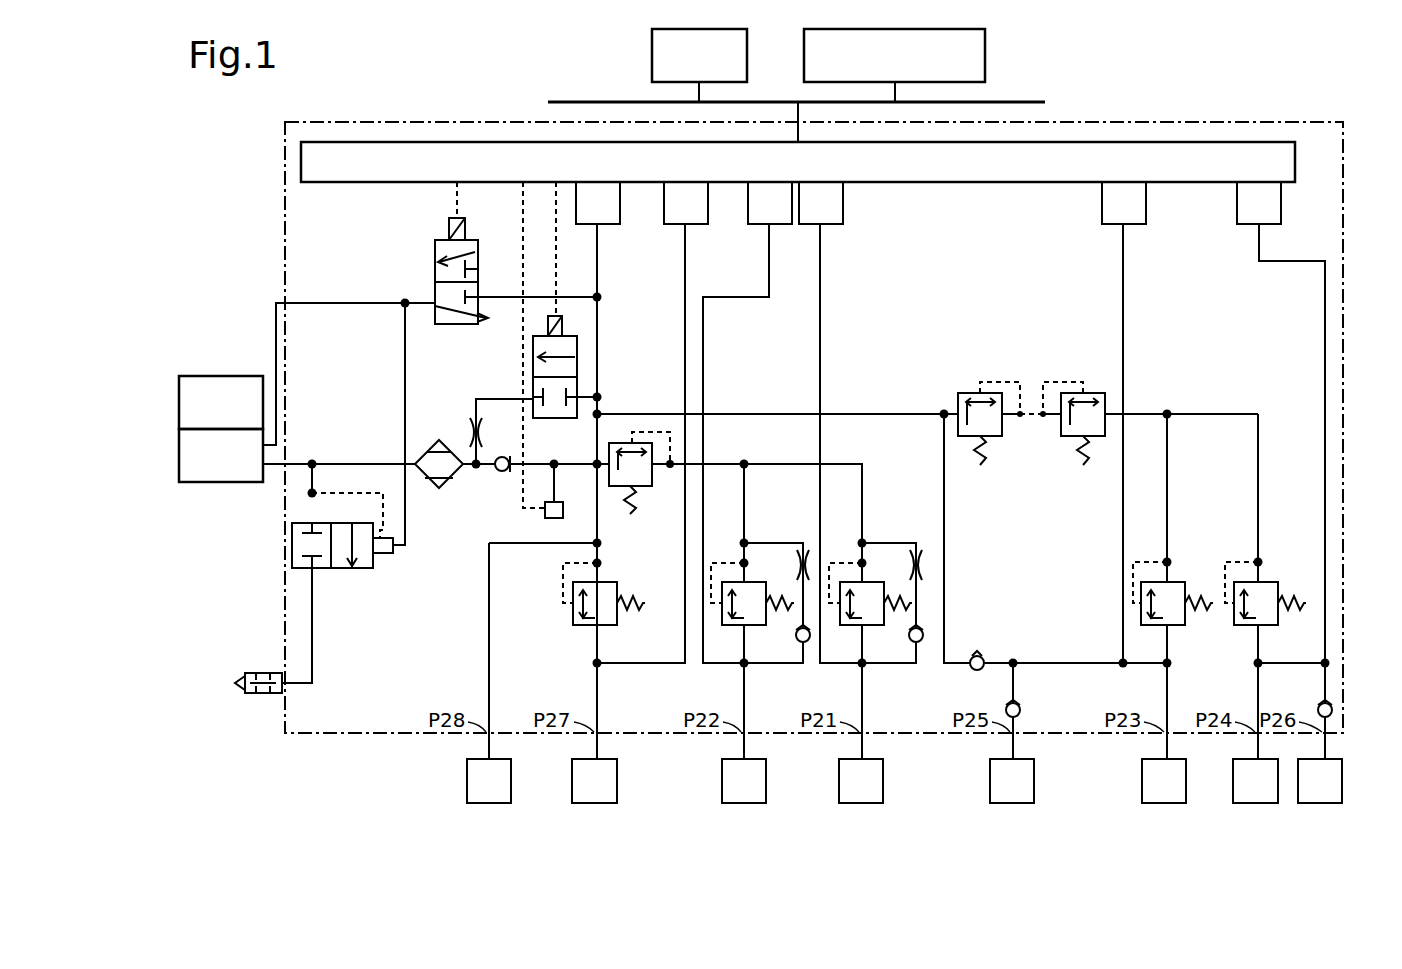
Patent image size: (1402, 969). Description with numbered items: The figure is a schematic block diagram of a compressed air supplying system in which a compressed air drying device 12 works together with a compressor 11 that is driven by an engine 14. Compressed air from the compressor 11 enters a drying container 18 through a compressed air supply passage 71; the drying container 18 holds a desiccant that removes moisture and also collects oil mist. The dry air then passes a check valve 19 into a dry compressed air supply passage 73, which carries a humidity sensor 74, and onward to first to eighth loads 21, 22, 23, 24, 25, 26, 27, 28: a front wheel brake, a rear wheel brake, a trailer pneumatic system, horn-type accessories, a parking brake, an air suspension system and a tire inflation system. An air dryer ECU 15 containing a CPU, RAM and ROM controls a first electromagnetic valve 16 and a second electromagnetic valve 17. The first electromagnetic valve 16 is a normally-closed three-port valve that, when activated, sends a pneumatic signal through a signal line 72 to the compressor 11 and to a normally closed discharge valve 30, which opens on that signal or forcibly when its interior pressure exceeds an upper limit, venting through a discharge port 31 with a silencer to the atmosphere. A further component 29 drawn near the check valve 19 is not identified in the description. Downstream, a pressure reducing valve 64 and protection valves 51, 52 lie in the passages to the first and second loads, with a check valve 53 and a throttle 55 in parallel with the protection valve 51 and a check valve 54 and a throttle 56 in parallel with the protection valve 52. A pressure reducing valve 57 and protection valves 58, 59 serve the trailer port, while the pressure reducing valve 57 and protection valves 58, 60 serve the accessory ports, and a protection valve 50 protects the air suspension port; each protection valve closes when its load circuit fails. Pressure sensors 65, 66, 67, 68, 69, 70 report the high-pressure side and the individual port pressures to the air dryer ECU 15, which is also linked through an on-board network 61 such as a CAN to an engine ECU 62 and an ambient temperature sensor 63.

The compressor 11 is at (196, 482).
The compressed air drying device 12 is at (302, 122).
The engine 14 is at (264, 376).
The air dryer ECU 15 is at (301, 163).
The first electromagnetic valve 16 is at (435, 250).
The second electromagnetic valve 17 is at (577, 346).
The drying container 18 is at (433, 451).
The check valve 19 is at (495, 471).
The first load 21 is at (850, 759).
The second load 22 is at (732, 759).
The third load 23 is at (1152, 759).
The fourth load 24 is at (1244, 759).
The fifth load 25 is at (1000, 759).
The sixth load 26 is at (1310, 759).
The seventh load 27 is at (584, 759).
The eighth load 28 is at (478, 759).
The orifice 29 is at (468, 424).
The discharge valve 30 is at (344, 568).
The discharge port 31 is at (262, 673).
The protection valve 50 is at (622, 580).
The protection valve 51 is at (729, 628).
The protection valve 52 is at (851, 628).
The check valve 53 is at (806, 650).
The check valve 54 is at (922, 650).
The throttle 55 is at (804, 550).
The throttle 56 is at (918, 550).
The pressure reducing valve 57 is at (968, 393).
The protection valve 58 is at (1092, 393).
The protection valve 59 is at (1180, 582).
The protection valve 60 is at (1272, 582).
The on-board network 61 is at (1028, 102).
The engine ECU 62 is at (652, 50).
The ambient temperature sensor 63 is at (804, 50).
The pressure reducing valve 64 is at (655, 488).
The pressure sensor 65 is at (604, 226).
The pressure sensor 66 is at (692, 226).
The pressure sensor 67 is at (776, 226).
The pressure sensor 68 is at (826, 226).
The pressure sensor 69 is at (1128, 226).
The pressure sensor 70 is at (1266, 226).
The compressed air supply passage 71 is at (347, 464).
The signal line 72 is at (405, 380).
The dry compressed air supply passage 73 is at (575, 462).
The humidity sensor 74 is at (550, 520).